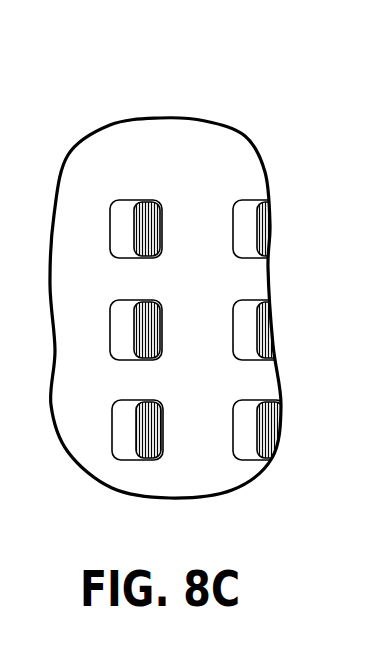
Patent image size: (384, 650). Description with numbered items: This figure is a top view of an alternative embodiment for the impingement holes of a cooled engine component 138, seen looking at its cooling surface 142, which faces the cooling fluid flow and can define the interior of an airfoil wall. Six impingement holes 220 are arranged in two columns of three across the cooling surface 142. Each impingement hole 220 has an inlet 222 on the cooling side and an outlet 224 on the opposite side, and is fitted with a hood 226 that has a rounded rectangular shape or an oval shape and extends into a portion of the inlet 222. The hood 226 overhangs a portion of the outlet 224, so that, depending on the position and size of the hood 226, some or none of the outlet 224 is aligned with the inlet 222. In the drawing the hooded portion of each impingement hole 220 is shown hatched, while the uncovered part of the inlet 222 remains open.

The engine component 138 is at (146, 270).
The cooling surface 142 is at (187, 147).
The impingement hole 220 is at (146, 260).
The inlet 222 is at (114, 239).
The outlet 224 is at (159, 257).
The hood 226 is at (152, 227).